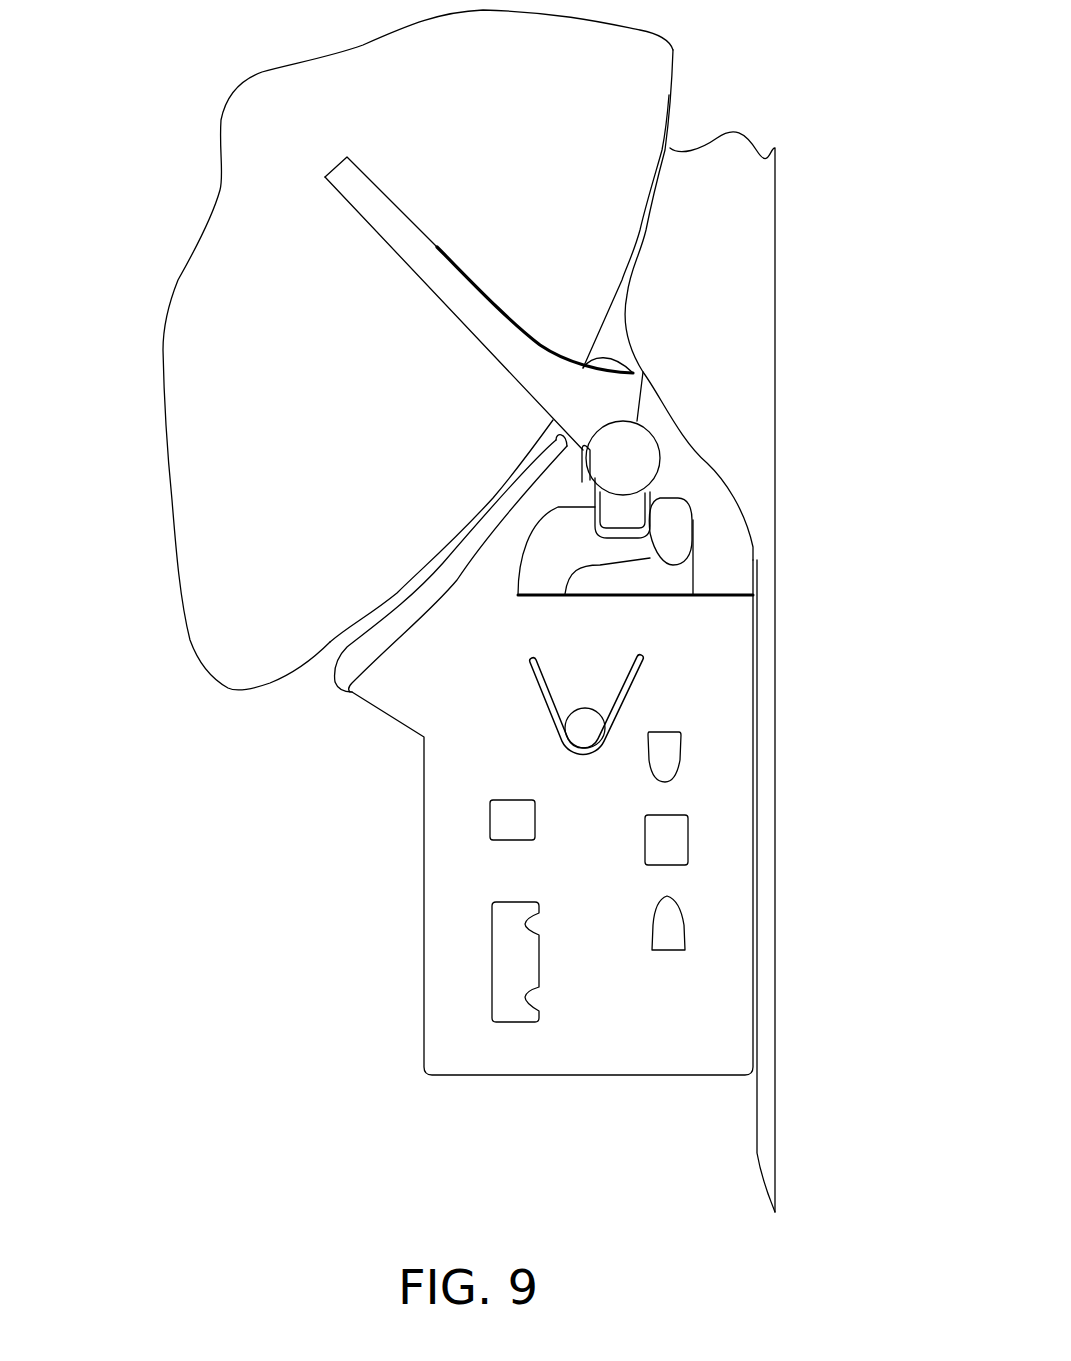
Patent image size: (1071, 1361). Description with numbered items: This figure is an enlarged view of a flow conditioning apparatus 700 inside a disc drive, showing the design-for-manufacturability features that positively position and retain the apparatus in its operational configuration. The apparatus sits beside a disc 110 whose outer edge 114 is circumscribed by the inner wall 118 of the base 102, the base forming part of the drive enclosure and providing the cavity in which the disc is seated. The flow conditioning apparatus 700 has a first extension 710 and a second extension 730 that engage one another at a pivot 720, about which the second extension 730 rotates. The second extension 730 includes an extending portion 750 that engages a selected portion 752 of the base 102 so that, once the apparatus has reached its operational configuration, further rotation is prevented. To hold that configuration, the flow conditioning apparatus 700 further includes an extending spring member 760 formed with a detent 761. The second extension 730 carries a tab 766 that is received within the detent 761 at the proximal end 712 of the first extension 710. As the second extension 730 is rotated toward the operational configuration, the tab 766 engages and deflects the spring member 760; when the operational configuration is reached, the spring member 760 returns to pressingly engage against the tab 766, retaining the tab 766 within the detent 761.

The base 102 is at (775, 240).
The disc 110 is at (180, 297).
The outer edge 114 is at (640, 232).
The inner wall 118 is at (656, 183).
The flow conditioning apparatus 700 is at (387, 798).
The first extension 710 is at (415, 607).
The proximal end 712 is at (562, 475).
The pivot 720 is at (638, 440).
The second extension 730 is at (380, 212).
The extending portion 750 is at (583, 368).
The selected portion 752 is at (634, 372).
The spring member 760 is at (620, 563).
The detent 761 is at (690, 563).
The tab 766 is at (637, 508).